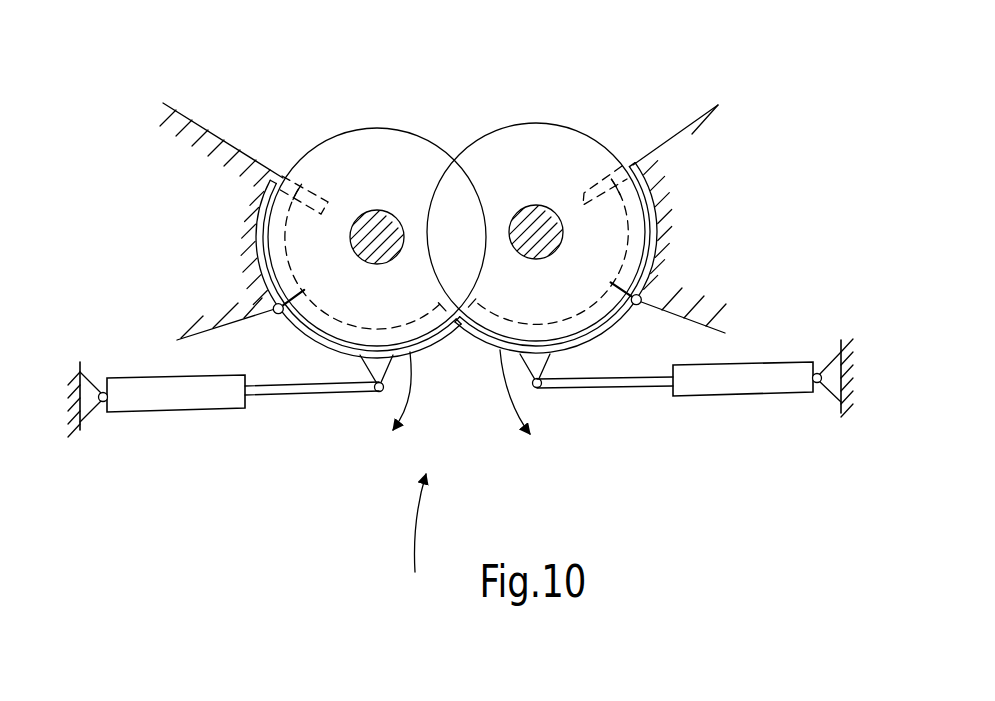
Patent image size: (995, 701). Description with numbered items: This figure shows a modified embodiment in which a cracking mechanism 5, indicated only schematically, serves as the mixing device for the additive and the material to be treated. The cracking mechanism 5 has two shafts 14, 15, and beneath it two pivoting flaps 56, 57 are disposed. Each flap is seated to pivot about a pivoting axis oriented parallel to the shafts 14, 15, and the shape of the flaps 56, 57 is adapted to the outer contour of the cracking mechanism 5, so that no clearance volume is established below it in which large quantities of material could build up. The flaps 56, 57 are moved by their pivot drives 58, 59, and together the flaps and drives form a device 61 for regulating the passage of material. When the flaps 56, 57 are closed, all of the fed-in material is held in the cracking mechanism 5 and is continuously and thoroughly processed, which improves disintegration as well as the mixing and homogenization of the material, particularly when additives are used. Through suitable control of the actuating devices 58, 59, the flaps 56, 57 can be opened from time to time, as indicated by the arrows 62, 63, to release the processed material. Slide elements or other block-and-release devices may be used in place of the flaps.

The cracking mechanism 5 is at (495, 105).
The shaft 14 is at (378, 212).
The shaft 15 is at (540, 208).
The pivoting flap 56 is at (430, 352).
The pivoting flap 57 is at (483, 345).
The pivot drive 58 is at (167, 416).
The pivot drive 59 is at (712, 400).
The device for regulating the passage of material 61 is at (422, 537).
The arrow 62 is at (405, 397).
The arrow 63 is at (507, 407).